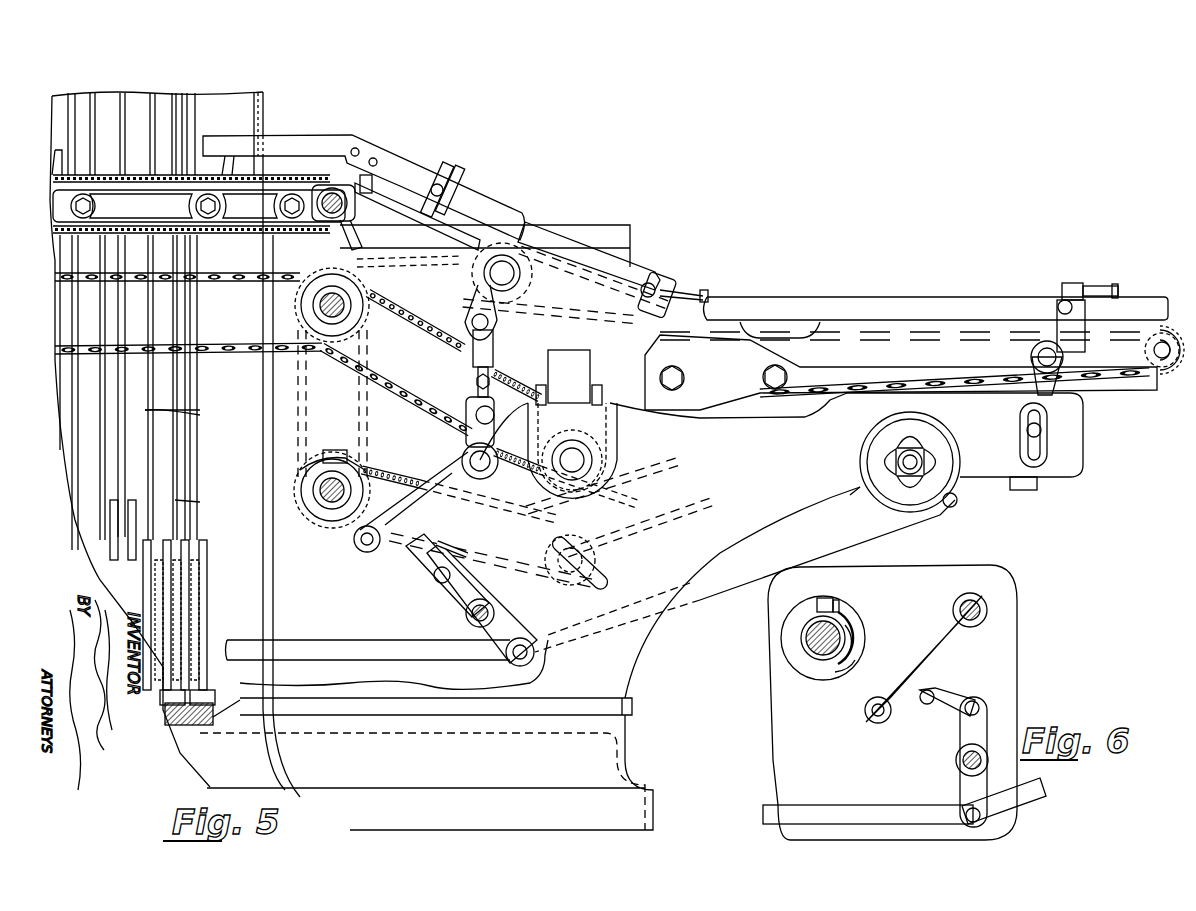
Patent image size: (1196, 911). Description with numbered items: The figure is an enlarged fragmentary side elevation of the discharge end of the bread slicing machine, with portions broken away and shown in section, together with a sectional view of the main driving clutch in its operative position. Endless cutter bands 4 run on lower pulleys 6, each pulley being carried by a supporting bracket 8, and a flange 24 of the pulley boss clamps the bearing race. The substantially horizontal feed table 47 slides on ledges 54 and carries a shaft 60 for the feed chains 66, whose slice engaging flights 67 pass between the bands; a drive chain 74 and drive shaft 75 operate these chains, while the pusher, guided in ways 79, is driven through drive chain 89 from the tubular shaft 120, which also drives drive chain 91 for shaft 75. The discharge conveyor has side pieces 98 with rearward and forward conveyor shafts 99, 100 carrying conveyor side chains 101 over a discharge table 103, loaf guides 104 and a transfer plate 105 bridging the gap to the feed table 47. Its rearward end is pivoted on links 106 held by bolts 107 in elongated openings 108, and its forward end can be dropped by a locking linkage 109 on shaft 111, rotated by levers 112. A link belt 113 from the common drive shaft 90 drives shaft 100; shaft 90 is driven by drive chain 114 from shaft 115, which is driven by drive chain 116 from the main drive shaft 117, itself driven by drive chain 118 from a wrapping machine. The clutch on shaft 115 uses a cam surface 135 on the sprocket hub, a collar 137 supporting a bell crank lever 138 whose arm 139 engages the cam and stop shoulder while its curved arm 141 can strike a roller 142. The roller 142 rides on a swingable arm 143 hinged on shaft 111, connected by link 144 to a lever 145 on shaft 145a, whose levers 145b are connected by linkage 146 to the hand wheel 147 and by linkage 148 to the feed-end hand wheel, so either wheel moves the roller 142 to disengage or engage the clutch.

In FIG. 5, the cutter band 4 is at (200, 415).
In FIG. 5, the lower pulley 6 is at (200, 502).
In FIG. 5, the supporting bracket 8 is at (205, 700).
In FIG. 5, the flange of the boss 24 is at (210, 572).
In FIG. 5, the feed table 47 is at (107, 210).
In FIG. 5, the ledge 54 is at (602, 236).
In FIG. 5, the shaft 60 is at (350, 215).
In FIG. 5, the feed chain 66 is at (240, 237).
In FIG. 5, the slice engaging flight 67 is at (228, 165).
In FIG. 5, the drive chain 74 is at (602, 395).
In FIG. 5, the drive shaft 75 is at (585, 460).
In FIG. 5, the ways 79 is at (590, 376).
In FIG. 5, the drive chain 89 is at (216, 353).
In FIG. 5, the common drive shaft 90 is at (358, 303).
In FIG. 5, the drive chain 91 is at (400, 352).
In FIG. 5, the side piece 98 is at (915, 358).
In FIG. 5, the rearward conveyor shaft 99 is at (1160, 362).
In FIG. 5, the forward conveyor shaft 100 is at (515, 282).
In FIG. 5, the conveyor side chain 101 is at (746, 330).
In FIG. 5, the discharge table 103 is at (782, 335).
In FIG. 5, the adjustable loaf guide 104 is at (820, 300).
In FIG. 5, the transfer plate 105 is at (500, 255).
In FIG. 5, the link 106 is at (1058, 398).
In FIG. 5, the bolt 107 is at (1030, 440).
In FIG. 5, the opening 108 is at (1042, 468).
In FIG. 5, the locking linkage 109 is at (472, 392).
In FIG. 5, the shaft 111 is at (466, 456).
In FIG. 6, the shaft 111 is at (988, 610).
In FIG. 5, the lever 112 is at (612, 570).
In FIG. 5, the link belt 113 is at (468, 250).
In FIG. 5, the drive chain 114 is at (310, 393).
In FIG. 5, the shaft 115 is at (332, 455).
In FIG. 6, the shaft 115 is at (820, 600).
In FIG. 5, the drive chain 116 is at (405, 470).
In FIG. 5, the main drive shaft 117 is at (586, 508).
In FIG. 5, the drive chain 118 is at (666, 513).
In FIG. 5, the tubular shaft 120 is at (312, 277).
In FIG. 6, the cam surface 135 is at (806, 637).
In FIG. 5, the collar 137 is at (320, 528).
In FIG. 6, the collar 137 is at (808, 676).
In FIG. 6, the bell crank lever 138 is at (860, 643).
In FIG. 6, the arm 139 is at (848, 610).
In FIG. 6, the arm 141 is at (856, 670).
In FIG. 5, the roller 142 is at (367, 553).
In FIG. 6, the roller 142 is at (868, 718).
In FIG. 5, the swingable arm 143 is at (455, 515).
In FIG. 6, the swingable arm 143 is at (963, 600).
In FIG. 5, the link 144 is at (428, 566).
In FIG. 6, the link 144 is at (956, 696).
In FIG. 5, the lever 145 is at (453, 598).
In FIG. 6, the lever 145 is at (960, 740).
In FIG. 5, the shaft 145a is at (495, 613).
In FIG. 6, the shaft 145a is at (957, 760).
In FIG. 6, the lever 145b is at (962, 789).
In FIG. 5, the linkage 146 is at (900, 527).
In FIG. 6, the linkage 146 is at (1036, 802).
In FIG. 5, the hand wheel 147 is at (966, 492).
In FIG. 5, the linkage 148 is at (336, 652).
In FIG. 6, the linkage 148 is at (825, 812).